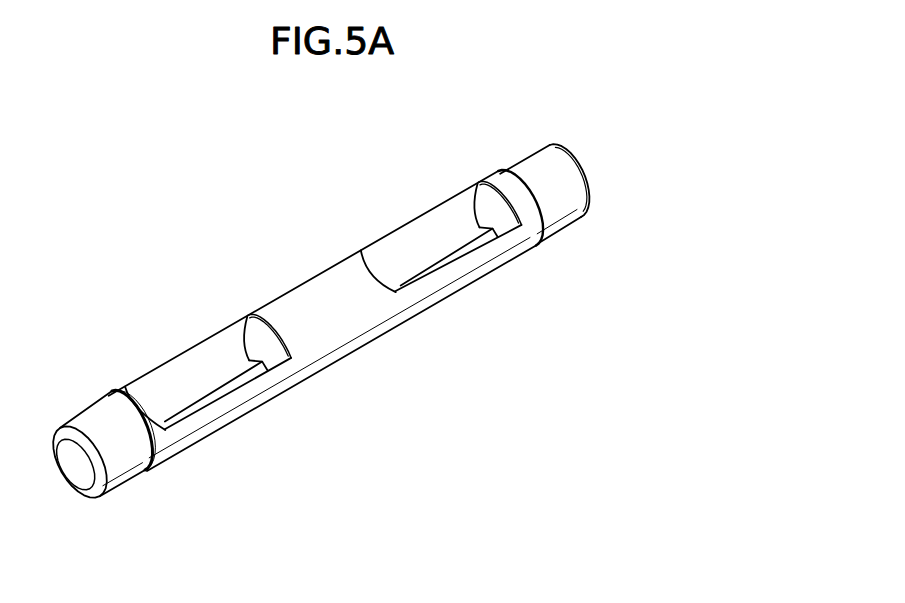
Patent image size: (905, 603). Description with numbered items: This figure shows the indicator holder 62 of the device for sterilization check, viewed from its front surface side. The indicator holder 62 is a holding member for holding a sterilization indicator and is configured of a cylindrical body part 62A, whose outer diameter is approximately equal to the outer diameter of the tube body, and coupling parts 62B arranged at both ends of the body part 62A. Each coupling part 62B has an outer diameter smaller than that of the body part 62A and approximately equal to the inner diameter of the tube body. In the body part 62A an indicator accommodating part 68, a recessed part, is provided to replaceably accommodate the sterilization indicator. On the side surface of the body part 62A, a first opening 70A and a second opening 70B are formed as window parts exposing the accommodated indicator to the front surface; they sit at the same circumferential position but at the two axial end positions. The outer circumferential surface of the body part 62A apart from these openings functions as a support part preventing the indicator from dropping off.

The indicator holder 62 is at (175, 298).
The body part 62A is at (298, 293).
The coupling part 62B is at (88, 421).
The indicator accommodating part 68 is at (403, 251).
The first opening 70A is at (232, 381).
The second opening 70B is at (455, 247).